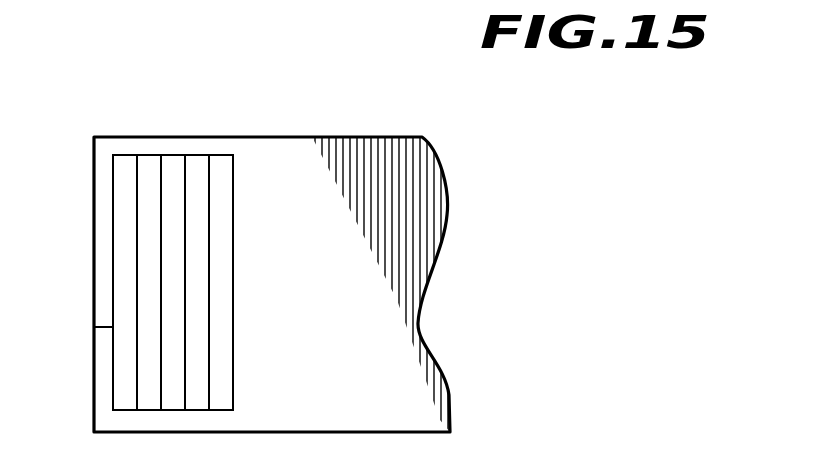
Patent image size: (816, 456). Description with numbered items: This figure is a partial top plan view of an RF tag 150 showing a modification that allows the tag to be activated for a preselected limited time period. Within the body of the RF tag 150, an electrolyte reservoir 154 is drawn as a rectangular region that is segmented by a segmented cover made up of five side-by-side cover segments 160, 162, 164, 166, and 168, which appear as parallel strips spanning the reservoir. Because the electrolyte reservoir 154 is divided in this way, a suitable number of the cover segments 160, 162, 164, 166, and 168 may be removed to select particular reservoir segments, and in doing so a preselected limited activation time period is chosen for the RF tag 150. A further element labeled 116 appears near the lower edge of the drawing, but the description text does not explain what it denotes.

The RF tag 150 is at (398, 118).
The electrolyte reservoir 154 is at (122, 411).
The cover segment 160 is at (125, 158).
The cover segment 162 is at (144, 163).
The cover segment 164 is at (175, 163).
The cover segment 166 is at (197, 160).
The cover segment 168 is at (227, 167).
The base member 116 is at (569, 449).